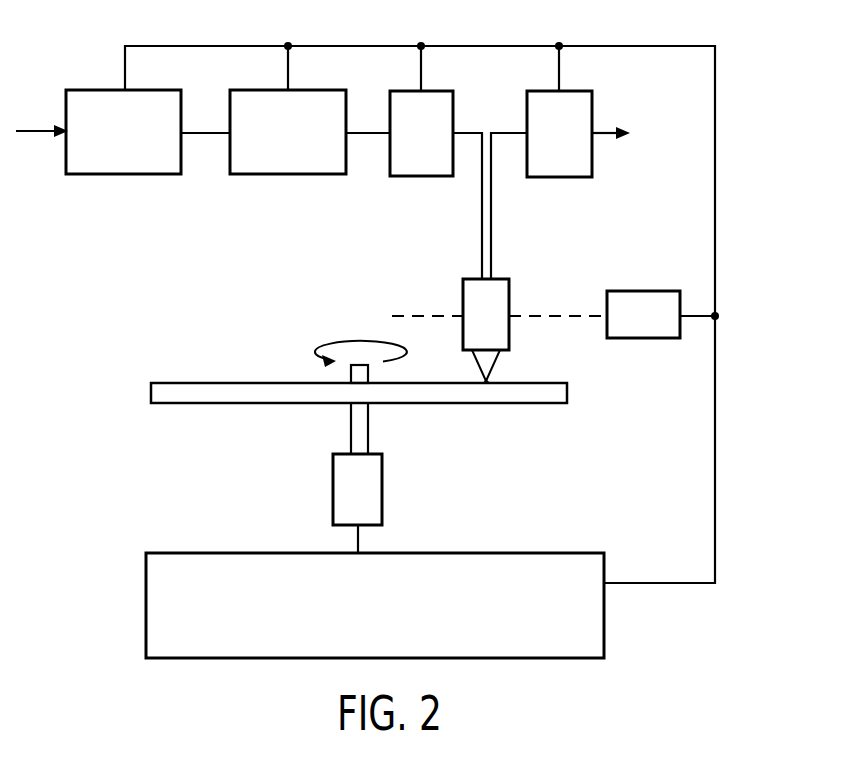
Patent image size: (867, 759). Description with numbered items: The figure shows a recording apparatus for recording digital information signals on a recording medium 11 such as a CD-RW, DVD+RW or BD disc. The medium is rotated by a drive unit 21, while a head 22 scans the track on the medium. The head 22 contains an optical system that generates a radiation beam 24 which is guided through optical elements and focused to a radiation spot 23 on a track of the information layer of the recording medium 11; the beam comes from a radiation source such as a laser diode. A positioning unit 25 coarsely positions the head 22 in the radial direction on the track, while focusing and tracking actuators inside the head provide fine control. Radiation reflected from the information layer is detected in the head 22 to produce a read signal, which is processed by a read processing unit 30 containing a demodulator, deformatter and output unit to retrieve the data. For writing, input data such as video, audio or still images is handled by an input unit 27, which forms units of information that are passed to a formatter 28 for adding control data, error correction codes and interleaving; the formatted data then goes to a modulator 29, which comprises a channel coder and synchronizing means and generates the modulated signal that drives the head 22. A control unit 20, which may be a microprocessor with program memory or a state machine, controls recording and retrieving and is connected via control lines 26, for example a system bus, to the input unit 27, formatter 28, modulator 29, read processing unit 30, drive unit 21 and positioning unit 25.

The recording medium 11 is at (538, 400).
The control unit 20 is at (570, 561).
The drive unit 21 is at (383, 478).
The head 22 is at (463, 297).
The radiation spot 23 is at (489, 380).
The radiation beam 24 is at (477, 360).
The positioning unit 25 is at (634, 336).
The control lines 26 is at (715, 143).
The input unit 27 is at (120, 163).
The formatter 28 is at (238, 163).
The modulator 29 is at (418, 163).
The read processing unit 30 is at (593, 100).